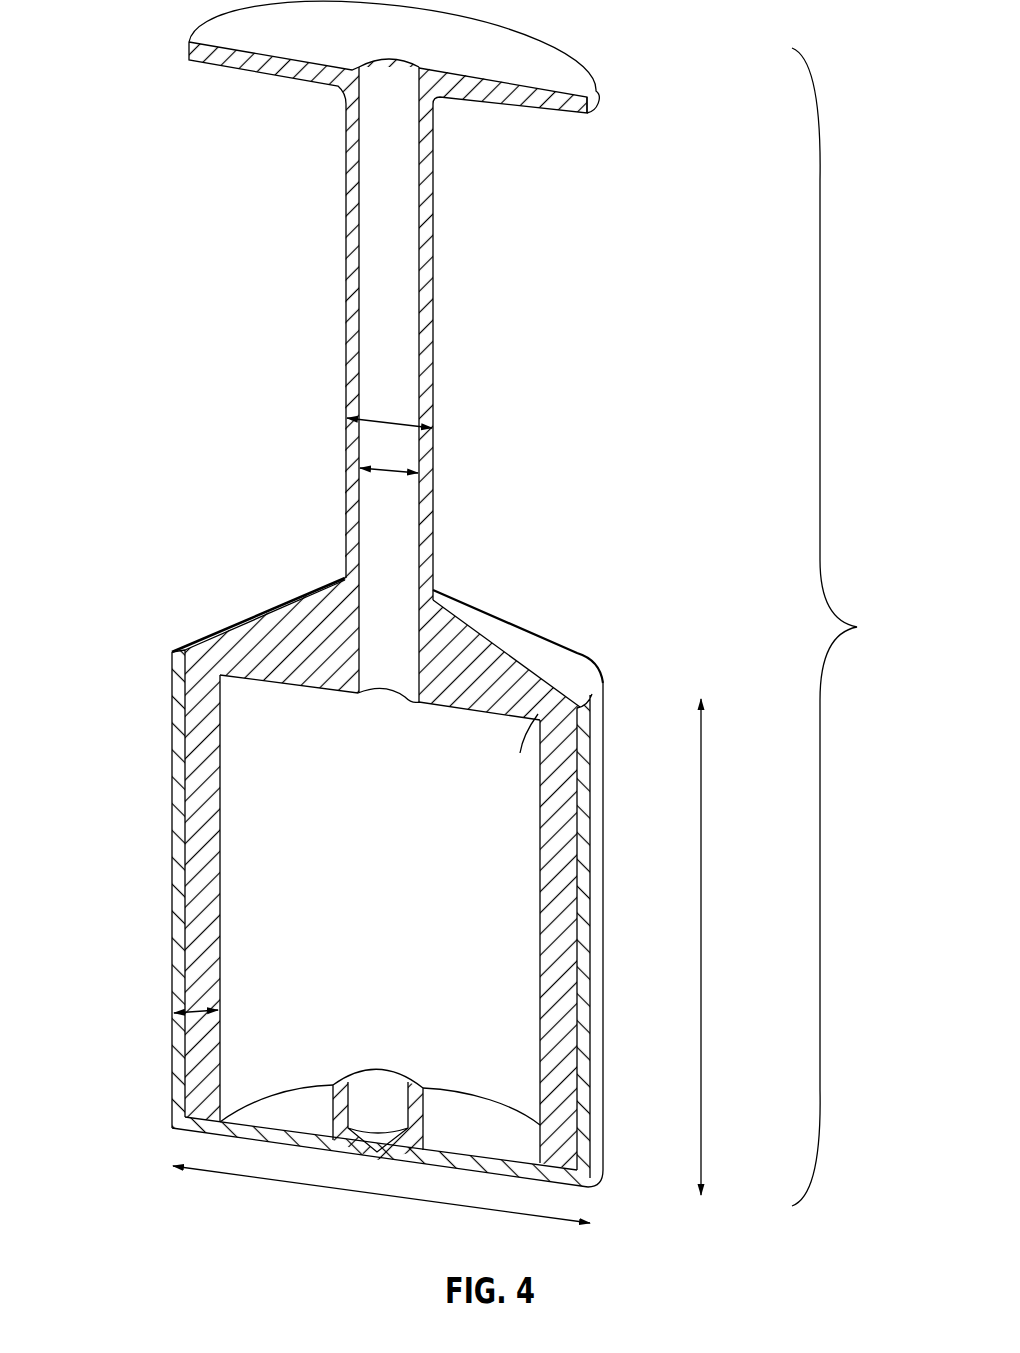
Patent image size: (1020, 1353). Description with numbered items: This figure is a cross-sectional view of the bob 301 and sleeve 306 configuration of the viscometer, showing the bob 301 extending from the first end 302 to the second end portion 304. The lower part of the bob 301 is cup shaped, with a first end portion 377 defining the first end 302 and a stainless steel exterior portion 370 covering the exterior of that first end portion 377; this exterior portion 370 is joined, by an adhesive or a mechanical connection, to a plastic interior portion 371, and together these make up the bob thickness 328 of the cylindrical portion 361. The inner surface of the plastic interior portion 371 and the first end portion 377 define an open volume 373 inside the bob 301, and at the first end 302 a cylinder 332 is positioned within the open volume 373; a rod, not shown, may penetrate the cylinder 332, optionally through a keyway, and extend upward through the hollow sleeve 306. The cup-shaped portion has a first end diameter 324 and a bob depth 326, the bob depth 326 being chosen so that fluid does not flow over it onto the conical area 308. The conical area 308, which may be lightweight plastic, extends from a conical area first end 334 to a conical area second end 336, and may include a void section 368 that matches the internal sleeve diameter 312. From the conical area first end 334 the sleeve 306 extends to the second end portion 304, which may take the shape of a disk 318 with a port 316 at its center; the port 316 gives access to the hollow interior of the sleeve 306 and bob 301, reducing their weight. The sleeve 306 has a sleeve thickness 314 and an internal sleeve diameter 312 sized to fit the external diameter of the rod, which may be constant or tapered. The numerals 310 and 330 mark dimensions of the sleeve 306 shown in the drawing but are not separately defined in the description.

The bob 301 is at (853, 627).
The first end 302 is at (224, 1207).
The second end portion 304 is at (232, 33).
The sleeve 306 is at (434, 213).
The conical area 308 is at (513, 618).
The stem outer diameter 310 is at (415, 424).
The internal sleeve diameter 312 is at (404, 468).
The sleeve thickness 314 is at (430, 302).
The port 316 is at (392, 80).
The disk 318 is at (600, 92).
The first end diameter 324 is at (360, 1196).
The bob depth 326 is at (704, 828).
The bob thickness 328 is at (190, 1010).
The bore 330 is at (366, 171).
The cylinder 332 is at (384, 1088).
The conical area first end 334 is at (304, 571).
The conical area second end 336 is at (595, 686).
The cylindrical portion 361 is at (126, 735).
The void section 368 is at (384, 705).
The exterior portion 370 is at (583, 902).
The interior portion 371 is at (541, 908).
The open volume 373 is at (580, 700).
The first end portion 377 is at (565, 1168).